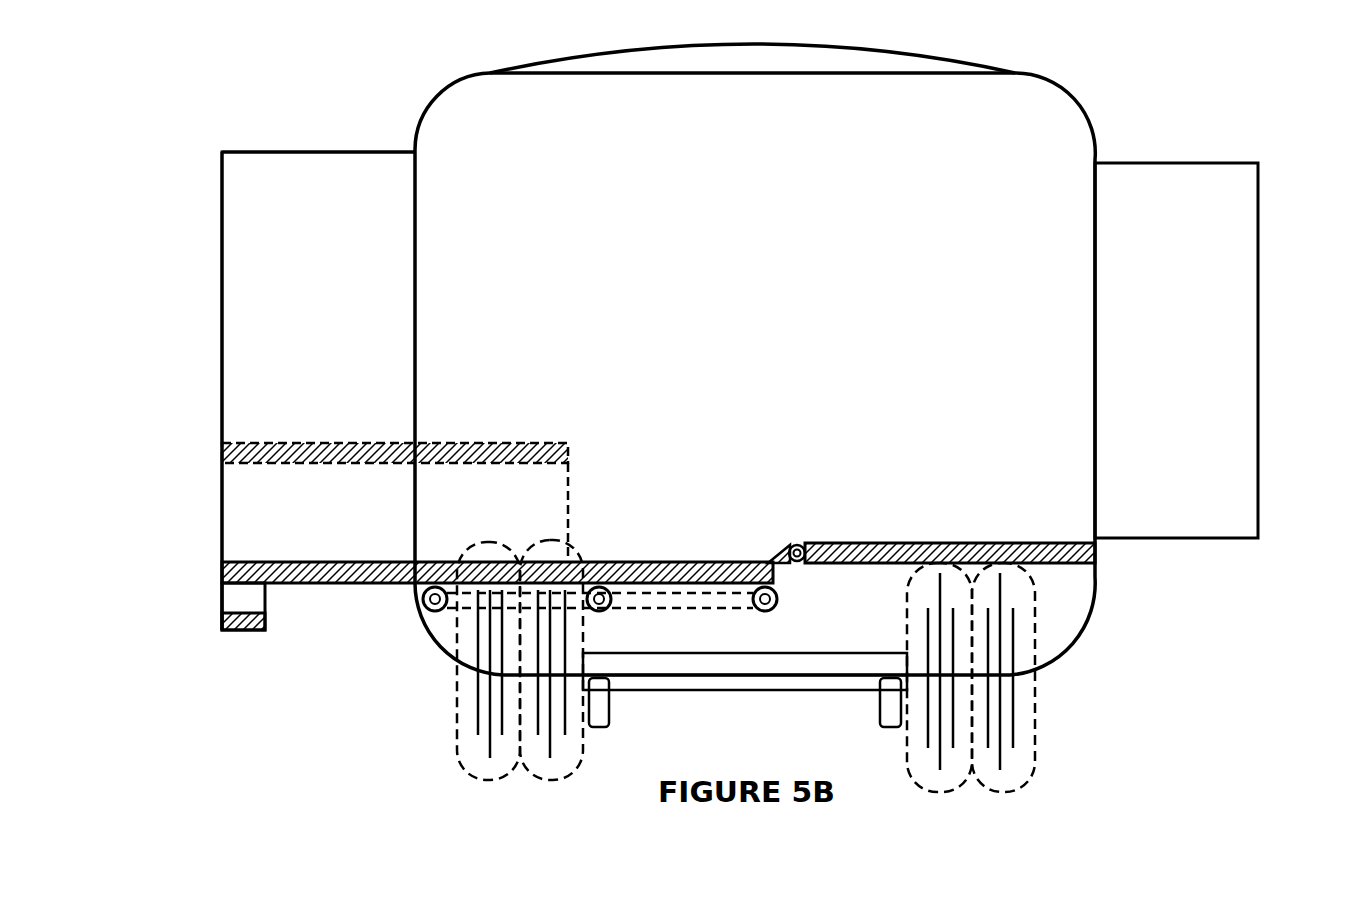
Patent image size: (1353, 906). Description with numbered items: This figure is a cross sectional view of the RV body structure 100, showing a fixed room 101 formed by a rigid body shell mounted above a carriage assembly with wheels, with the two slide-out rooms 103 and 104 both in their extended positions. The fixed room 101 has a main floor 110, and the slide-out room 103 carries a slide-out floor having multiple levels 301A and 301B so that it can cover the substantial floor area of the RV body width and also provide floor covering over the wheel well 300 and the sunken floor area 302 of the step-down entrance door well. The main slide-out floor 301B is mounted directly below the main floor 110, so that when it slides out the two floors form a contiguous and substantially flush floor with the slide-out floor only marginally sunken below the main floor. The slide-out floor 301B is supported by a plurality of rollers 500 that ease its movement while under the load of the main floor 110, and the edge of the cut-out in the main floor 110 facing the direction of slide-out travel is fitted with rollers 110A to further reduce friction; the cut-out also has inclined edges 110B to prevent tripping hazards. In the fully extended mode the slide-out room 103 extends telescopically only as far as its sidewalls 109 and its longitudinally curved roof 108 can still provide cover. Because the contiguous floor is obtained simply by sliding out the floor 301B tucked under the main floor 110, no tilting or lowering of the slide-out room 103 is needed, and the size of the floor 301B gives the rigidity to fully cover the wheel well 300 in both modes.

The RV body structure 100 is at (1118, 82).
The fixed room 101 is at (435, 110).
The slide-out room 103 is at (200, 185).
The slide-out room 104 is at (1210, 223).
The longitudinally curved roof 108 is at (305, 150).
The slide-out sidewalls 109 is at (255, 337).
The main floor 110 is at (922, 543).
The rollers 110A is at (803, 547).
The inclined edges 110B is at (765, 548).
The wheel well 300 is at (437, 523).
The slide-out floor level 301A is at (565, 450).
The main slide-out floor 301B is at (222, 578).
The sunken floor area 302 is at (222, 620).
The rollers 500 is at (777, 600).